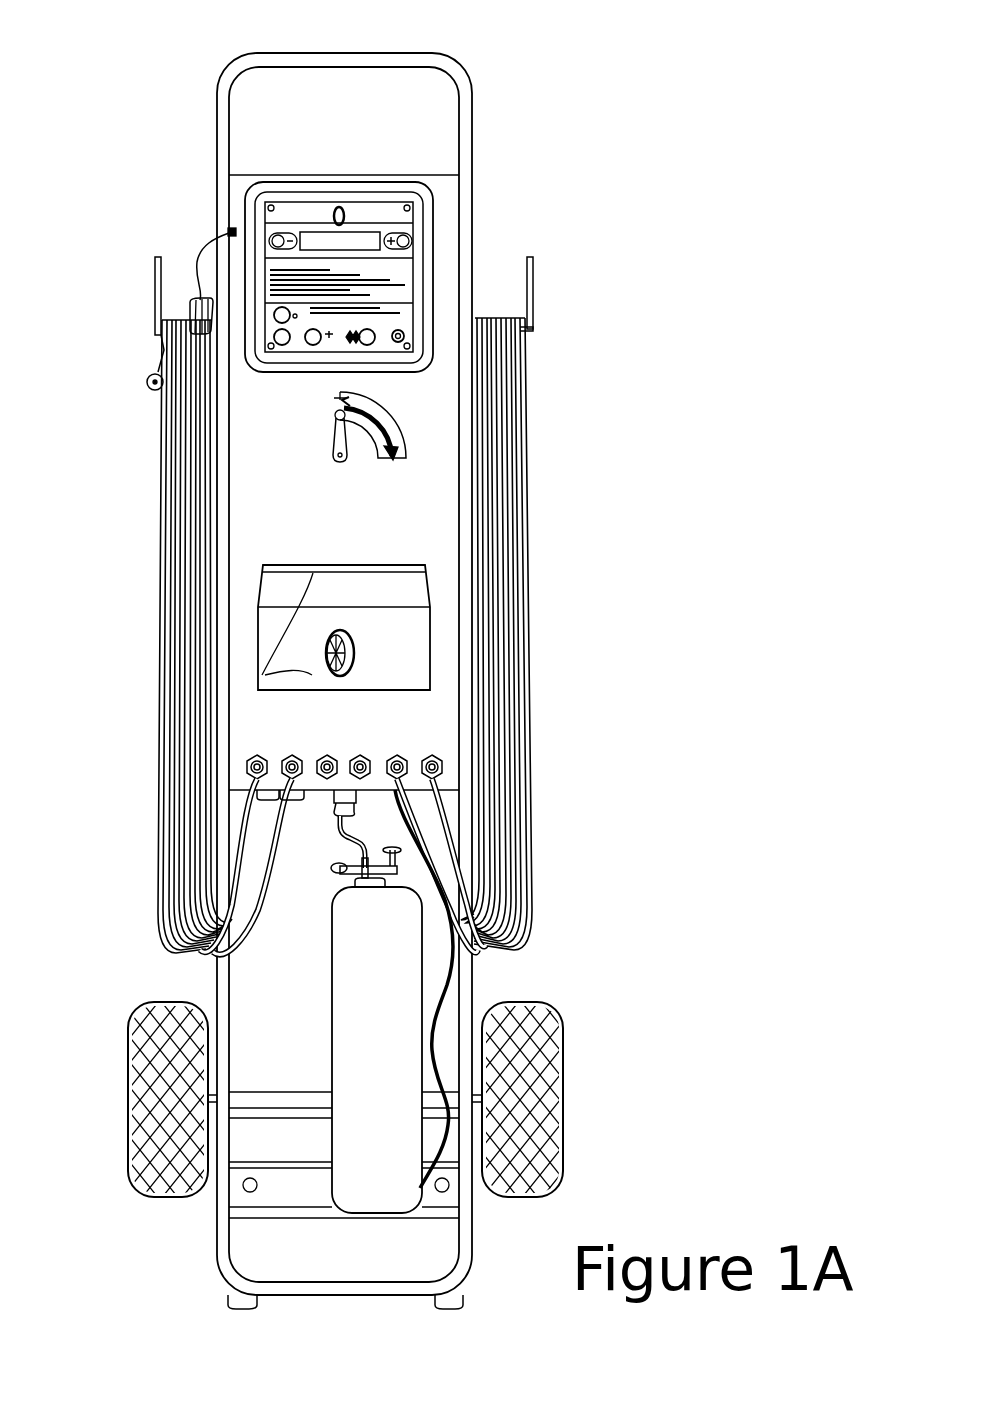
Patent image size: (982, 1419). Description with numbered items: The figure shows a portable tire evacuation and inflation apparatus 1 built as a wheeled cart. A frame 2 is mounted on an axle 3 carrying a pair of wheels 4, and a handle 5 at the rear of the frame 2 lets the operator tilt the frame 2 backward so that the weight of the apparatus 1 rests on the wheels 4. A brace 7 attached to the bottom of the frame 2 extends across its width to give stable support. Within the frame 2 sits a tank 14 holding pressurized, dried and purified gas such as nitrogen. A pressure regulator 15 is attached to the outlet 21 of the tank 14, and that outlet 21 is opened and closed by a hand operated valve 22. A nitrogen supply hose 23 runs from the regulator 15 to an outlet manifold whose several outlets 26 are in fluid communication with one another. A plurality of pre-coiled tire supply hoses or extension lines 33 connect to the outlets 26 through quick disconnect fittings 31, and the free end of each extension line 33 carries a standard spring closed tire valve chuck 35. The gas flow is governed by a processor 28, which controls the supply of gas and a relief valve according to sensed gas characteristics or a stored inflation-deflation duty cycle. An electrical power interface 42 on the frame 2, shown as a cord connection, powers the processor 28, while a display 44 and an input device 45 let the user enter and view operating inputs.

The tire evacuation and inflation apparatus 1 is at (485, 53).
The frame 2 is at (447, 498).
The axle 3 is at (256, 1096).
The wheels 4 is at (563, 1098).
The handle 5 is at (340, 53).
The brace 7 is at (217, 1252).
The tank 14 is at (402, 1168).
The pressure regulator 15 is at (343, 863).
The outlet 21 is at (457, 975).
The hand operated valve 22 is at (397, 842).
The nitrogen supply hose 23 is at (362, 823).
The outlet 26 is at (257, 757).
The processor 28 is at (249, 188).
The quick disconnect fittings 31 is at (303, 783).
The tire supply hoses or extension lines 33 is at (160, 542).
The tire valve chuck 35 is at (148, 378).
The electrical power interface 42 is at (233, 232).
The display 44 is at (380, 232).
The input device 45 is at (405, 317).